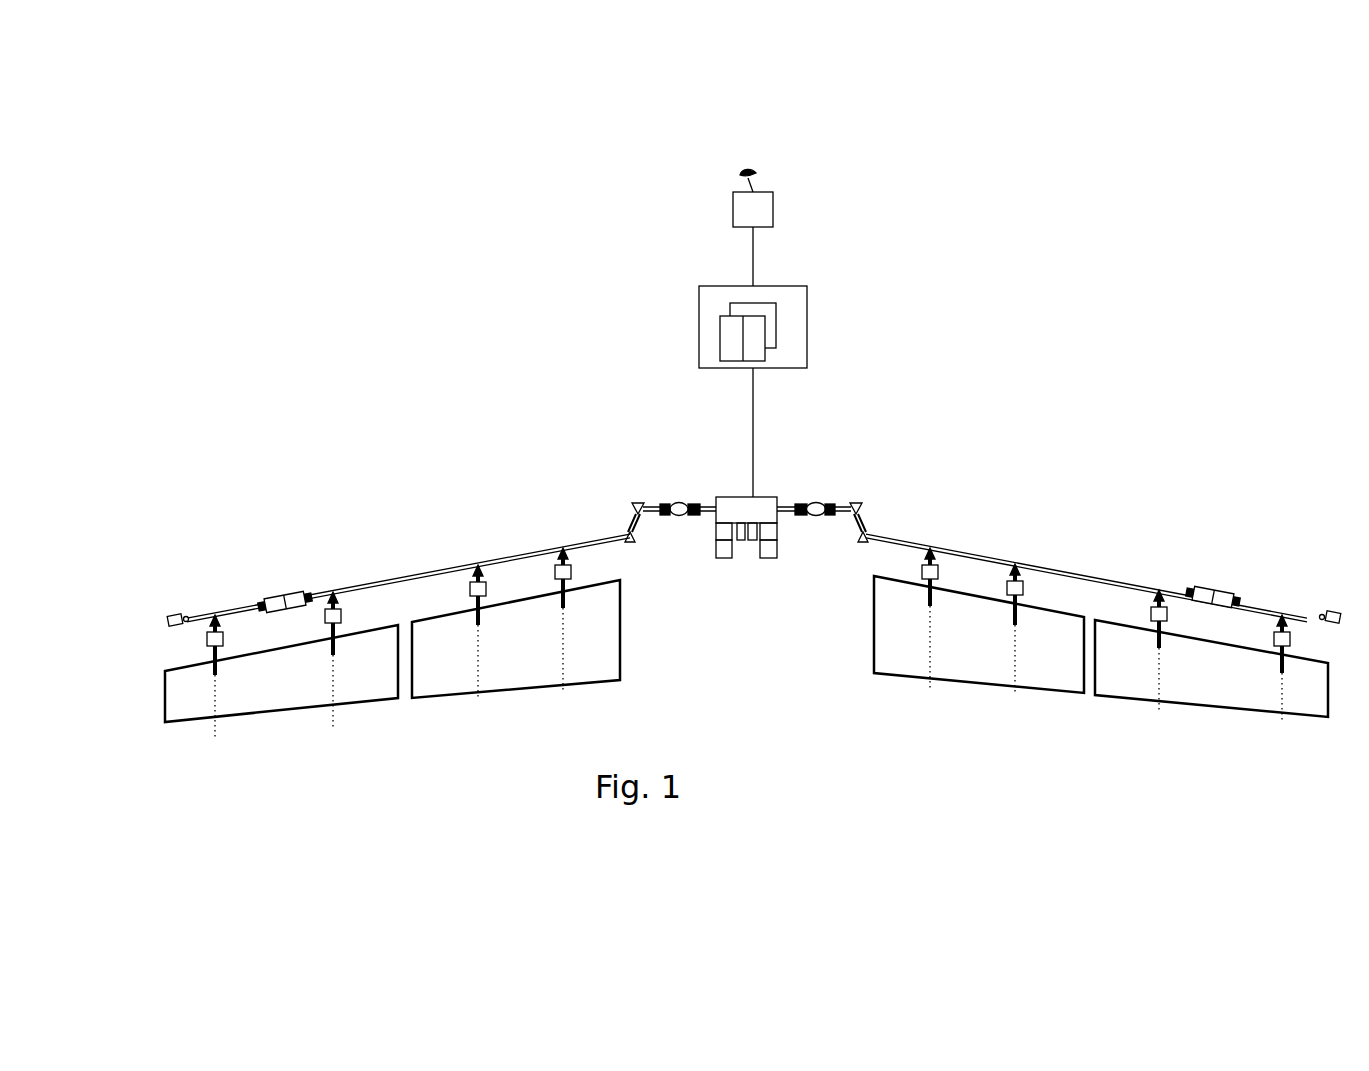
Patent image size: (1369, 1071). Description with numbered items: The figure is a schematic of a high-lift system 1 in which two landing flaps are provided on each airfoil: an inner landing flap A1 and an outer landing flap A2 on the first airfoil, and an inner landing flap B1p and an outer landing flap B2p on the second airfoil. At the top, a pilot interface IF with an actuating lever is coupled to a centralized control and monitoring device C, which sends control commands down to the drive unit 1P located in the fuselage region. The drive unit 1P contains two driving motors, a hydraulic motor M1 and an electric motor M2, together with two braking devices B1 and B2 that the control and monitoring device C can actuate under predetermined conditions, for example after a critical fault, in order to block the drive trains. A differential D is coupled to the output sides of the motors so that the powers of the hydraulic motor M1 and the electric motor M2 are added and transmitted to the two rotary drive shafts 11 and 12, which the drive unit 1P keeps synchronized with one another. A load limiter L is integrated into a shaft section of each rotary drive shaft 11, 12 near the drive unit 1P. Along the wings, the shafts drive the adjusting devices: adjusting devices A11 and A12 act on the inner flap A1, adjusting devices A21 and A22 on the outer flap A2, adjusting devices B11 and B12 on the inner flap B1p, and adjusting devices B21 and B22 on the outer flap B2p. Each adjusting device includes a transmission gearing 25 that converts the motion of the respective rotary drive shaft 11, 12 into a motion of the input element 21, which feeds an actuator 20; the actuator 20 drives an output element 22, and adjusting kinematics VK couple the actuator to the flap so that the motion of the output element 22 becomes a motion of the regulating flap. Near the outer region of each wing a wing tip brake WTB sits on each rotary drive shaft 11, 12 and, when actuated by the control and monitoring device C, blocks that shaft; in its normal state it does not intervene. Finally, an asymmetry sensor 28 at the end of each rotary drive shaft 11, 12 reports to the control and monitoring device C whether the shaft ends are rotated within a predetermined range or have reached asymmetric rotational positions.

The high-lift system 1 is at (1108, 212).
The pilot interface IF is at (733, 202).
The control and monitoring device C is at (796, 296).
The drive unit 1P is at (763, 510).
The braking device B1 is at (720, 525).
The hydraulic motor M1 is at (723, 556).
The braking device B2 is at (767, 530).
The electric motor M2 is at (777, 554).
The differential D is at (738, 562).
The load limiter L is at (681, 503).
The rotary drive shaft 11 is at (379, 578).
The rotary drive shaft 12 is at (1110, 581).
The wing tip brake WTB is at (290, 594).
The asymmetry sensor 28 is at (174, 614).
The outer landing flap A2 is at (298, 703).
The inner landing flap A1 is at (542, 668).
The inner landing flap B1p is at (994, 671).
The outer landing flap B2p is at (1238, 691).
The adjusting device A22 is at (196, 520).
The adjusting device A21 is at (357, 520).
The adjusting device A12 is at (475, 520).
The adjusting device A11 is at (561, 520).
The adjusting device B11 is at (935, 520).
The adjusting device B12 is at (1020, 520).
The adjusting device B21 is at (1160, 520).
The adjusting device B22 is at (1282, 520).
The transmission gearing 25 is at (215, 612).
The input element 21 is at (236, 626).
The actuator 20 is at (205, 637).
The adjusting kinematics VK is at (184, 658).
The output element 22 is at (233, 657).